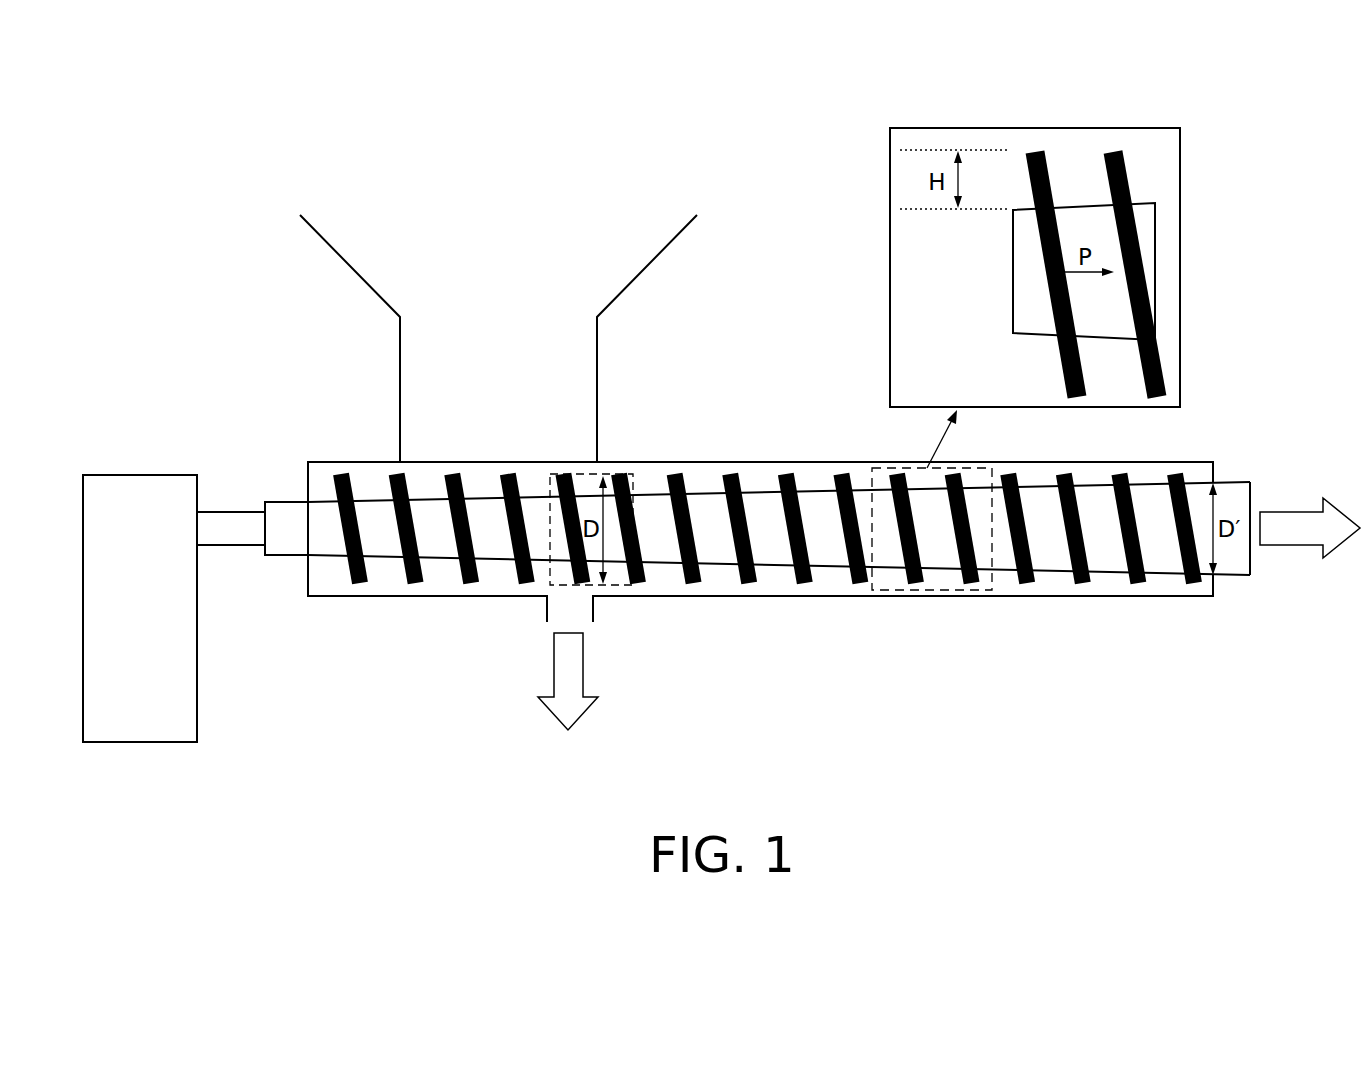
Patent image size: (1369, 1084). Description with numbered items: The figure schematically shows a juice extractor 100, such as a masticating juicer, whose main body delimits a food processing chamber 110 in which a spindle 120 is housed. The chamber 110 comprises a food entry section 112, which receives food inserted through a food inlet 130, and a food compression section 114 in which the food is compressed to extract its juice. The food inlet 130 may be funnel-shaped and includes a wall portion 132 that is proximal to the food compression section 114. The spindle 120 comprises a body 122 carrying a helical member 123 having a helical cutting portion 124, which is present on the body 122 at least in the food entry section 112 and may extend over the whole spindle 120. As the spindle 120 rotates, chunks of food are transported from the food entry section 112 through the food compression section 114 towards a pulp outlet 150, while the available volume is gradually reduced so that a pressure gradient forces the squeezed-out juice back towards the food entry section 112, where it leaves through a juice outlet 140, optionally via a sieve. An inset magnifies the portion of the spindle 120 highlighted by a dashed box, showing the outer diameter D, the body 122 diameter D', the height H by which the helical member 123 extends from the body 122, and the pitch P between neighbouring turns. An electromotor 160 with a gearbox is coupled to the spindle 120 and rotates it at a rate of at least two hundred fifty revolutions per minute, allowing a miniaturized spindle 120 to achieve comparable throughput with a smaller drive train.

The juice extractor 100 is at (286, 762).
The food processing chamber 110 is at (760, 556).
The food entry section 112 is at (387, 583).
The food compression section 114 is at (717, 585).
The spindle 120 is at (723, 531).
The body 122 is at (283, 512).
The helical member 123 is at (728, 475).
The helical cutting portion 124 is at (418, 572).
The food inlet 130 is at (498, 334).
The wall portion 132 is at (597, 425).
The juice outlet 140 is at (577, 607).
The pulp outlet 150 is at (1215, 580).
The electromotor 160 is at (142, 475).